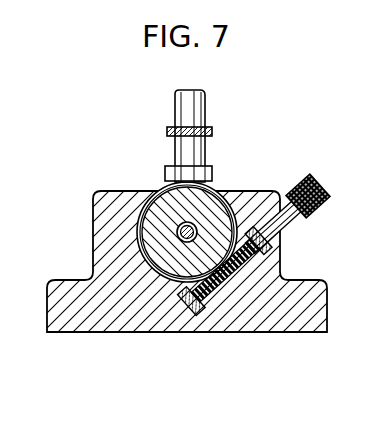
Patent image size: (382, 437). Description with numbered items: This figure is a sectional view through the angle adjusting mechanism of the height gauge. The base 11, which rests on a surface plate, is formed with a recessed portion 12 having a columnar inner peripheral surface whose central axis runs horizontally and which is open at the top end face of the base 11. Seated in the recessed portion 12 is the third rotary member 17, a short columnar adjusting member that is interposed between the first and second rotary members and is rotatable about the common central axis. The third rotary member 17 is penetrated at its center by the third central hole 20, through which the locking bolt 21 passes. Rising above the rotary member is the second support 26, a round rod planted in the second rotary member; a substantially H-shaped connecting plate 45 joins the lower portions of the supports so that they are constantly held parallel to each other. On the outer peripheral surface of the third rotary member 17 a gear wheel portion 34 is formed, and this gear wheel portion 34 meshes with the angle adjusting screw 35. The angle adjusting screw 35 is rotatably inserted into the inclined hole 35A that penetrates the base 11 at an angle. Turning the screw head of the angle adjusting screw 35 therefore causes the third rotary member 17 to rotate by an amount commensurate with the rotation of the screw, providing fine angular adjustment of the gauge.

The base 11 is at (94, 205).
The recessed portion 12 is at (160, 280).
The third rotary member 17 is at (171, 190).
The third central hole 20 is at (138, 232).
The locking bolt 21 is at (216, 186).
The second support 26 is at (204, 98).
The gear wheel portion 34 is at (257, 191).
The angle adjusting screw 35 is at (260, 270).
The inclined hole 35A is at (232, 292).
The connecting plate 45 is at (169, 127).